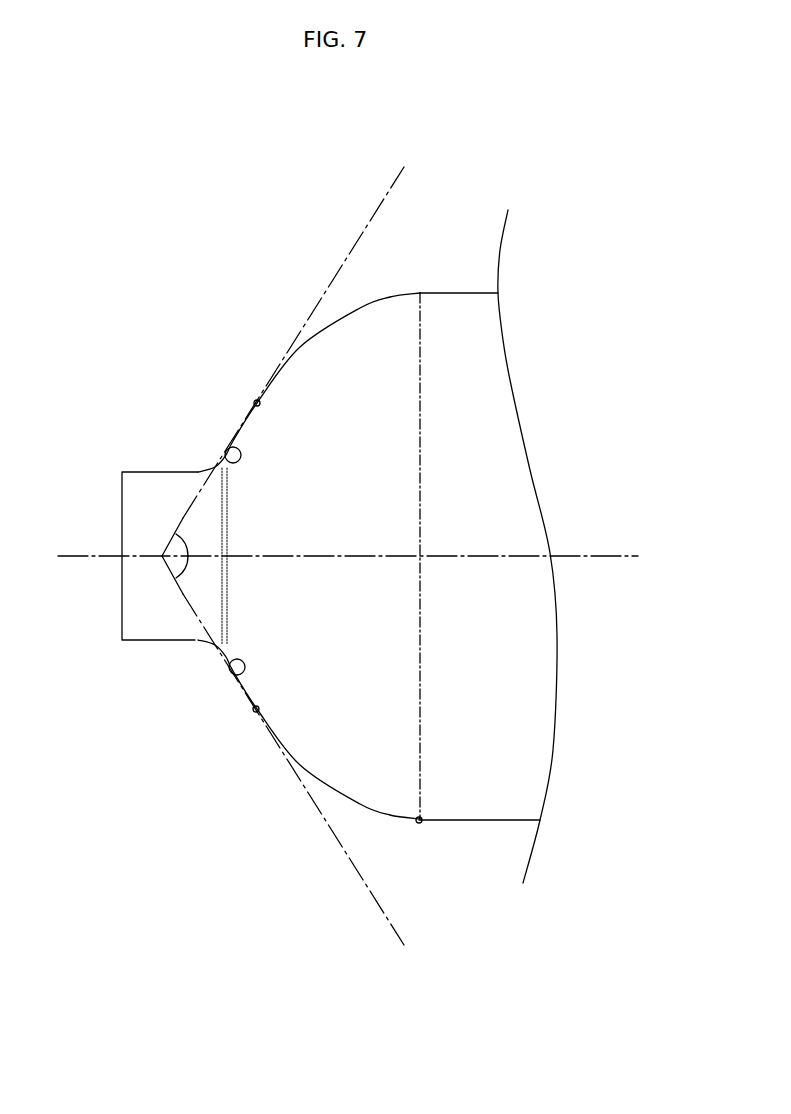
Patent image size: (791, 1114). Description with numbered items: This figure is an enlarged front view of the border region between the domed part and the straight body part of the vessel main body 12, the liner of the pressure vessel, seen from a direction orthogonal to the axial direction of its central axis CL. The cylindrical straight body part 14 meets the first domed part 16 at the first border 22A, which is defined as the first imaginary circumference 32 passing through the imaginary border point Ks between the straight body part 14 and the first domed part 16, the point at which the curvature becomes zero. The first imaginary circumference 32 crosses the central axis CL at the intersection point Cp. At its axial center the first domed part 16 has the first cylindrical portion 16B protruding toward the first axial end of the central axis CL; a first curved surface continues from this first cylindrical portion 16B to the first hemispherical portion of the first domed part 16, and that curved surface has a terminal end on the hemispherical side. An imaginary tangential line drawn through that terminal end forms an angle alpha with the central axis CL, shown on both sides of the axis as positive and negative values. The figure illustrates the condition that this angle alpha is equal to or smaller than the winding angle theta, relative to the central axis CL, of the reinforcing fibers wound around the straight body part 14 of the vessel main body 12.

The vessel main body 12 is at (527, 536).
The straight body part 14 is at (492, 821).
The first domed part 16 is at (313, 599).
The first cylindrical portion 16B is at (143, 642).
The first border 22A is at (420, 293).
The first imaginary circumference 32 is at (425, 405).
The intersection point Cp is at (421, 555).
The central axis CL is at (567, 555).
The imaginary border point Ks is at (419, 823).